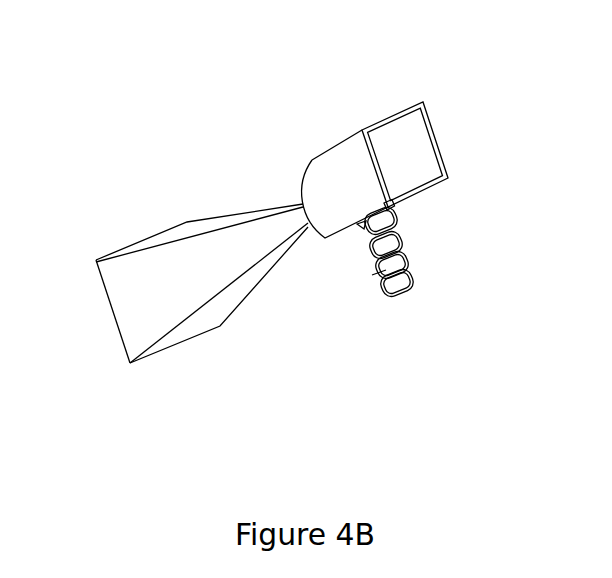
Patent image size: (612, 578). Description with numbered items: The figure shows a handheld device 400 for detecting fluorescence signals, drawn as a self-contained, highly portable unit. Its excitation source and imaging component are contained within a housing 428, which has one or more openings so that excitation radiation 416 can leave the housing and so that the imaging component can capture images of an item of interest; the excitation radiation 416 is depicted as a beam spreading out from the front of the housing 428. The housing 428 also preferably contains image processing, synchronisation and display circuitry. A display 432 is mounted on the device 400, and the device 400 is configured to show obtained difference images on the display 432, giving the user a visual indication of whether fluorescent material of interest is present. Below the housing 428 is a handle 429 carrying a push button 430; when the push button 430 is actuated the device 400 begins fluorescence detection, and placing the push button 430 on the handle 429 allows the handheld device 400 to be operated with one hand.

The handheld device 400 is at (253, 156).
The excitation radiation 416 is at (125, 292).
The housing 428 is at (352, 175).
The handle 429 is at (380, 273).
The push button 430 is at (362, 227).
The display 432 is at (415, 152).